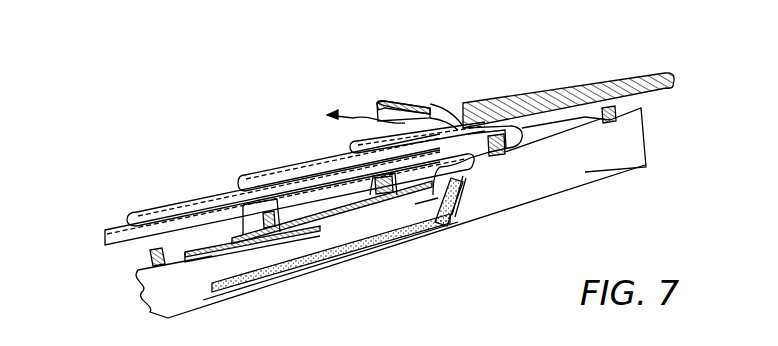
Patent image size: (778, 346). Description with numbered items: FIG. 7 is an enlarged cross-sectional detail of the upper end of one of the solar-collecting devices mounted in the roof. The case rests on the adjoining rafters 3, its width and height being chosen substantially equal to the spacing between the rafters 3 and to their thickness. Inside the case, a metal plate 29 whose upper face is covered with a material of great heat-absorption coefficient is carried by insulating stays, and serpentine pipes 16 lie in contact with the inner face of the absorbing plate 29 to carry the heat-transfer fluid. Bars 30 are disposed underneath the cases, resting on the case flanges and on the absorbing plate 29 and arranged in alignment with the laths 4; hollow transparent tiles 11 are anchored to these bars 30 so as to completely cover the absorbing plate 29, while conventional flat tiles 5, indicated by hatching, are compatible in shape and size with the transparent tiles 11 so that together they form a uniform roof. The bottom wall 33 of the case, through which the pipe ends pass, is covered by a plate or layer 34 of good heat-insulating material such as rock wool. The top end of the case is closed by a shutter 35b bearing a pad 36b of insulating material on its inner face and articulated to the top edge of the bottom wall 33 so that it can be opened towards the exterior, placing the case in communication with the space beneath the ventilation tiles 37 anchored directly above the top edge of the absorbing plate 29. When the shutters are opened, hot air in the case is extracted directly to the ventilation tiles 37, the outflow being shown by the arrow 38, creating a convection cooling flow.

The rafter 3 is at (587, 172).
The lath 4 is at (622, 136).
The flat tile 5 is at (607, 92).
The hollow transparent tile 11 is at (214, 200).
The serpentine pipe 16 is at (243, 237).
The metal plate 29 is at (300, 213).
The bar 30 is at (246, 223).
The bottom wall 33 is at (373, 243).
The plate or layer of heat-insulating material 34 is at (318, 258).
The shutter 35b is at (466, 178).
The pad of insulating material 36b is at (458, 198).
The ventilation tile 37 is at (398, 101).
The arrow 38 is at (432, 122).